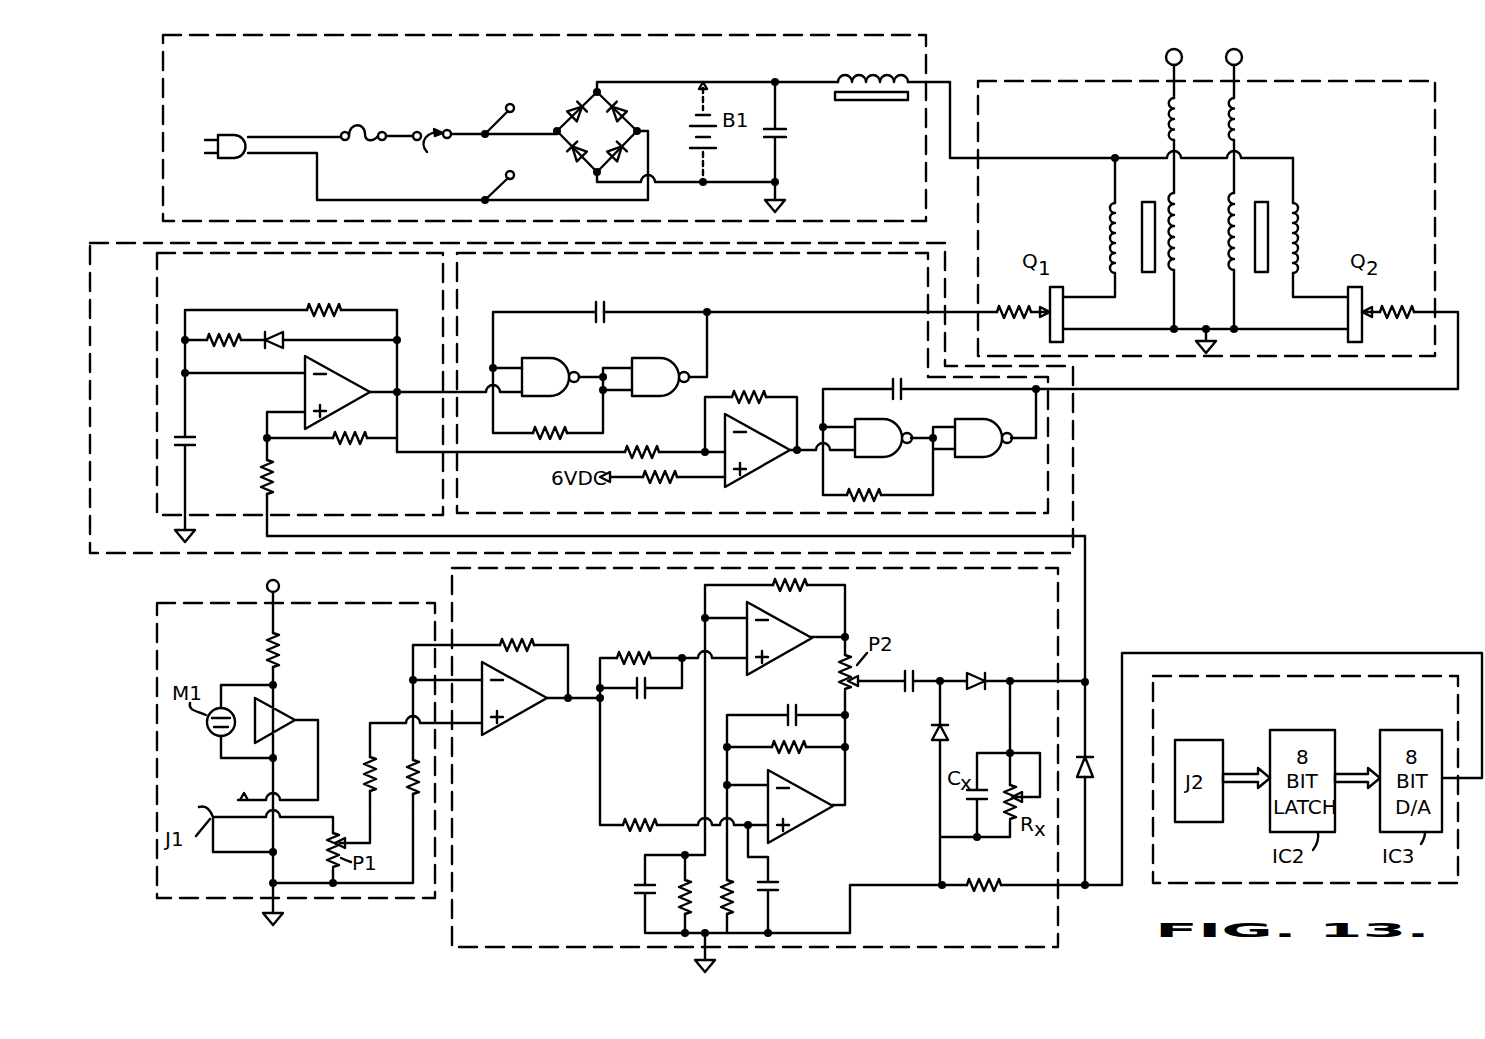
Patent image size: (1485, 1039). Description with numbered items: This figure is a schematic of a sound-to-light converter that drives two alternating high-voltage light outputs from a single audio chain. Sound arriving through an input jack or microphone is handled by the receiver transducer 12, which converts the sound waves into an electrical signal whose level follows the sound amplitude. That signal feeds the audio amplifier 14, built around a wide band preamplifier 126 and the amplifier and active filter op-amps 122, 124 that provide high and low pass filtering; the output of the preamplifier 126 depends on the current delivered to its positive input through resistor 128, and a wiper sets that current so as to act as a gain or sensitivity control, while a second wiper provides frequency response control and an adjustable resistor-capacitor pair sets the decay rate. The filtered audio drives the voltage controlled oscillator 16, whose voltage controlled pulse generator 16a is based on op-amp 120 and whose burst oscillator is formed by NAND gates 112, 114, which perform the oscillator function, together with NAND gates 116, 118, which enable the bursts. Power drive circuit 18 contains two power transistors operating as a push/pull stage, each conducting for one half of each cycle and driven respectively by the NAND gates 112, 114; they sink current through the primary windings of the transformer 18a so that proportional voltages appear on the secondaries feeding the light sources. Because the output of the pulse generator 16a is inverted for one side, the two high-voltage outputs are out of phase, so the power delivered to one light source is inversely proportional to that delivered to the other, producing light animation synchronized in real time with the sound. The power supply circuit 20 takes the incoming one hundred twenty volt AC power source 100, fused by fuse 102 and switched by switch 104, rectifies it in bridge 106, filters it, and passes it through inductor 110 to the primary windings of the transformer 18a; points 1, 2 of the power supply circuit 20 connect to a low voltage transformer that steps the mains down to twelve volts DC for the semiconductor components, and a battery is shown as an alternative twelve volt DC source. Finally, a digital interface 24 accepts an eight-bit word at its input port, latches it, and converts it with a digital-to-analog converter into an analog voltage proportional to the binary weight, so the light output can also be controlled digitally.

The receiver transducer 12 is at (157, 632).
The audio amplifier 14 is at (1013, 564).
The voltage controlled oscillator 16 is at (945, 243).
The voltage controlled pulse generator 16a is at (157, 283).
The power drive circuit 18 is at (1378, 81).
The transformer 18a is at (1323, 173).
The power supply circuit 20 is at (163, 83).
The digital control circuit 24 is at (1428, 885).
The AC power source 100 is at (227, 135).
The fuse 102 is at (367, 129).
The switch 104 is at (425, 146).
The bridge 106 is at (587, 98).
The inductor 110 is at (840, 78).
The NAND gate 112 is at (644, 358).
The NAND gate 114 is at (972, 458).
The NAND gate 116 is at (533, 358).
The NAND gate 118 is at (894, 424).
The op-amp 120 is at (349, 360).
The amplifier and active filter 122 is at (779, 621).
The amplifier and active filter 124 is at (795, 826).
The preamplifier 126 is at (516, 718).
The resistor 128 is at (364, 770).
The point 1 is at (501, 107).
The point 2 is at (501, 174).